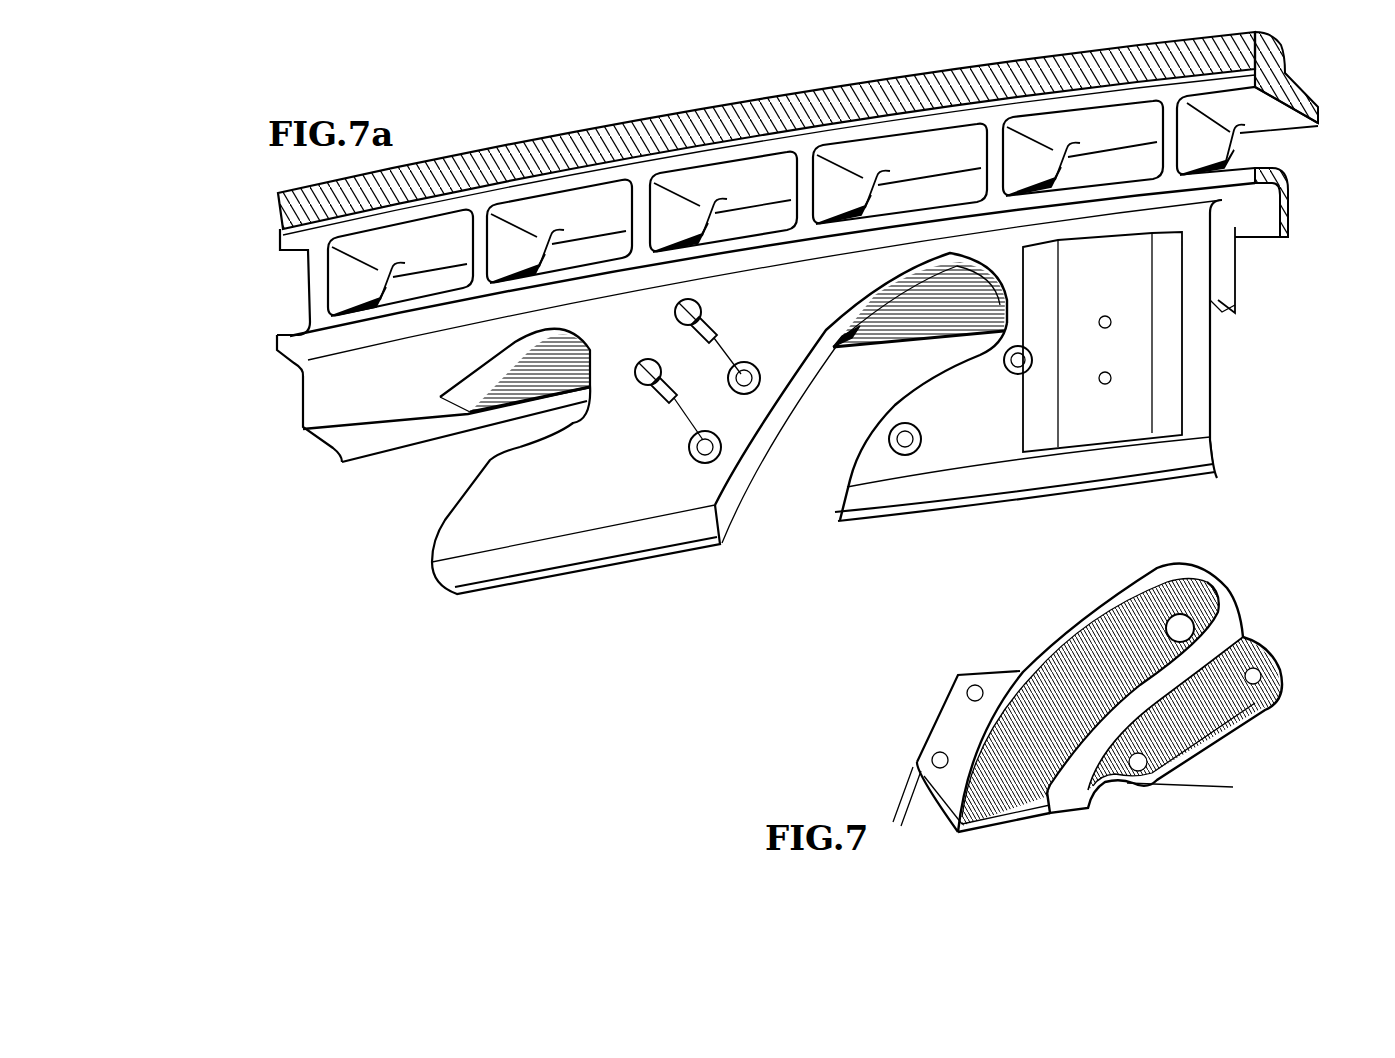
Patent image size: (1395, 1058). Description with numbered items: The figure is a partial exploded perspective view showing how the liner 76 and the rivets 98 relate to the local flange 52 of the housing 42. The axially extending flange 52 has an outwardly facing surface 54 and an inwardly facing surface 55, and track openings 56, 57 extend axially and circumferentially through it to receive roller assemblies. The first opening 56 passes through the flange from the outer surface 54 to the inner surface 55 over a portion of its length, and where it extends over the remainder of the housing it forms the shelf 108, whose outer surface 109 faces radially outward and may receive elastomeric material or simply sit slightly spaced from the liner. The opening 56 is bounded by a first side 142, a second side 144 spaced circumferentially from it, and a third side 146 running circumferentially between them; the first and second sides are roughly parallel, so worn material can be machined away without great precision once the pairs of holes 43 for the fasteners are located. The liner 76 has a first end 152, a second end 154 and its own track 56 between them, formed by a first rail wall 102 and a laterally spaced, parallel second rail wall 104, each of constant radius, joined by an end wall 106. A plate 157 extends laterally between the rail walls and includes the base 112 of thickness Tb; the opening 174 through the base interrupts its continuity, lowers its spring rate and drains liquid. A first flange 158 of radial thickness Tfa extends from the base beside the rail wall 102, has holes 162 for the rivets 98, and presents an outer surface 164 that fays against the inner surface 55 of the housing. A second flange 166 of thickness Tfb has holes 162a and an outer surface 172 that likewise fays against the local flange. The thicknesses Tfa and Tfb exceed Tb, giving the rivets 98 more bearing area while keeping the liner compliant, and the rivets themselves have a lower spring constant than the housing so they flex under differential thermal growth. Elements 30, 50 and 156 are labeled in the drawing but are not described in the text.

In FIG. 7a, the window openings 30 is at (432, 233).
In FIG. 7a, the housing 42 is at (1292, 306).
In FIG. 7a, the holes 43 is at (718, 398).
In FIG. 7a, the web 50 is at (312, 290).
In FIG. 7a, the local flange 52 is at (301, 406).
In FIG. 7a, the outwardly facing surface 54 is at (571, 503).
In FIG. 7a, the inwardly facing surface 55 is at (735, 513).
In FIG. 7a, the track opening 56 is at (859, 417).
In FIG. 7a, the track opening 57 is at (476, 466).
In FIG. 7a, the rivets 98 is at (644, 366).
In FIG. 7a, the shelf 108 is at (523, 388).
In FIG. 7a, the outer surface of shelf 109 is at (986, 314).
In FIG. 7a, the first side 142 is at (768, 420).
In FIG. 7a, the second side 144 is at (846, 468).
In FIG. 7a, the third side 146 is at (985, 244).
In FIG. 7, the liner 76 is at (1101, 706).
In FIG. 7, the first rail wall 102 is at (1065, 632).
In FIG. 7, the second rail wall 104 is at (1062, 737).
In FIG. 7, the end wall 106 is at (1190, 560).
In FIG. 7, the base 112 is at (983, 822).
In FIG. 7, the first end 152 is at (1010, 835).
In FIG. 7, the second end 154 is at (1177, 557).
In FIG. 7, the curved face 156 is at (1087, 716).
In FIG. 7, the plate 157 is at (1119, 800).
In FIG. 7, the first flange 158 is at (963, 677).
In FIG. 7, the hole 162 is at (973, 687).
In FIG. 7, the holes 162a is at (1255, 668).
In FIG. 7, the outer surface 164 is at (943, 723).
In FIG. 7, the second flange 166 is at (1272, 708).
In FIG. 7, the outer surface 172 is at (1272, 685).
In FIG. 7, the opening 174 is at (1195, 621).
In FIG. 7, the radial thickness Tfa is at (931, 845).
In FIG. 7, the thickness Tfb is at (1200, 747).
In FIG. 7, the thickness Tb is at (1003, 798).